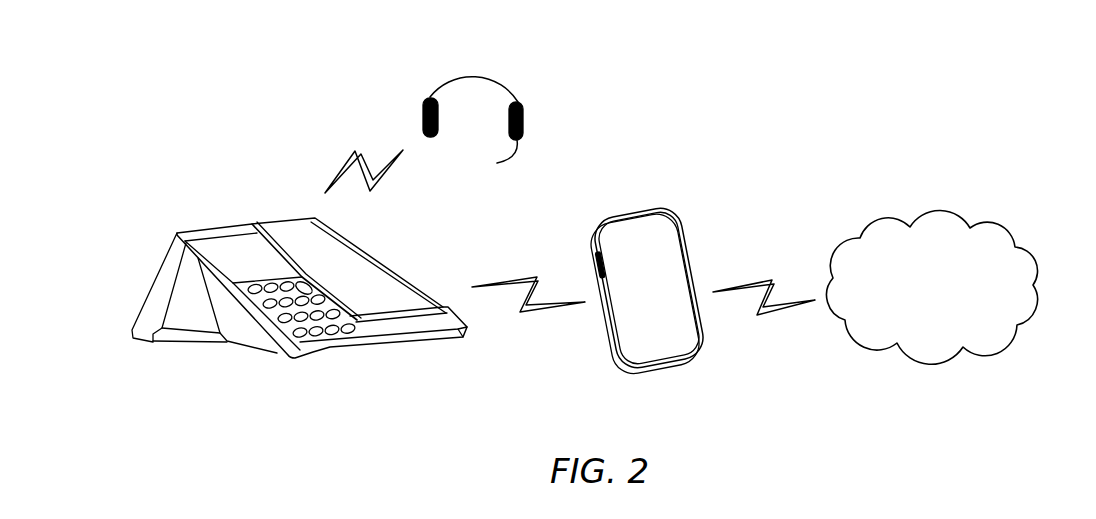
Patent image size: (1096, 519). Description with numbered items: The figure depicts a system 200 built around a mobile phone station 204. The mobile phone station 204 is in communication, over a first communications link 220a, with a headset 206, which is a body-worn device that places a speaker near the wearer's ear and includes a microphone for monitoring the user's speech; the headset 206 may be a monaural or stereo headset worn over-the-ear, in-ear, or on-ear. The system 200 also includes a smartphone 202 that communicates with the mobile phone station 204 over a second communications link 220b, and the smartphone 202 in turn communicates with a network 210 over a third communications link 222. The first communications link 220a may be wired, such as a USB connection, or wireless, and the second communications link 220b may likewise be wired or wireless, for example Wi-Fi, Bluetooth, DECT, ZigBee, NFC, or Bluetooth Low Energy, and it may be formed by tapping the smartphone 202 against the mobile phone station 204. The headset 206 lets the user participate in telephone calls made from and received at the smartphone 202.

The system 200 is at (762, 92).
The smartphone 202 is at (683, 364).
The mobile phone station 204 is at (238, 223).
The headset 206 is at (448, 81).
The network 210 is at (922, 308).
The first communications link 220a is at (363, 141).
The second communications link 220b is at (506, 266).
The third communications link 222 is at (755, 280).